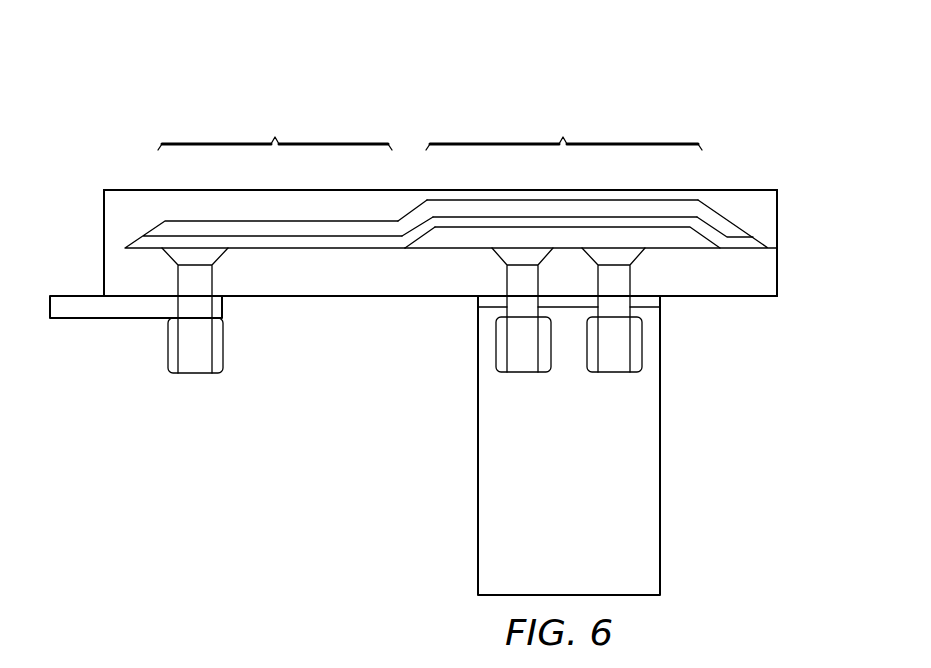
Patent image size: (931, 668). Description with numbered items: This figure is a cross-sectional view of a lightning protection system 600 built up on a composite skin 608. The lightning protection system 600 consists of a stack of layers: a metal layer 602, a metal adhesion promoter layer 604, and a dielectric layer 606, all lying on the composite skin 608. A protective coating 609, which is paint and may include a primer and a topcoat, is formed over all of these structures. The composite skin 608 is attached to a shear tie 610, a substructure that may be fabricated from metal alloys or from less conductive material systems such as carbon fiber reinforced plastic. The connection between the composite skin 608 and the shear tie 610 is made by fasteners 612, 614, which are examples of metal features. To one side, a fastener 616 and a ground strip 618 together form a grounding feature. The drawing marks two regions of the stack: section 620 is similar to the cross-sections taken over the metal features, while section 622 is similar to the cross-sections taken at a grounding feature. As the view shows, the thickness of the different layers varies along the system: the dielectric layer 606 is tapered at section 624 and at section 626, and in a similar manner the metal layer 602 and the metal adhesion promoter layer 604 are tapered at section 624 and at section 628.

The lightning protection system 600 is at (653, 99).
The metal layer 602 is at (708, 208).
The metal adhesion promoter layer 604 is at (765, 238).
The dielectric layer 606 is at (695, 249).
The composite skin 608 is at (778, 273).
The protective coating 609 is at (104, 208).
The shear tie 610 is at (587, 482).
The fastener 612 is at (496, 347).
The fastener 614 is at (642, 347).
The fastener 616 is at (168, 347).
The ground strip 618 is at (73, 294).
The section 620 is at (564, 129).
The section 622 is at (275, 128).
The section 624 is at (720, 223).
The section 626 is at (418, 208).
The section 628 is at (153, 228).